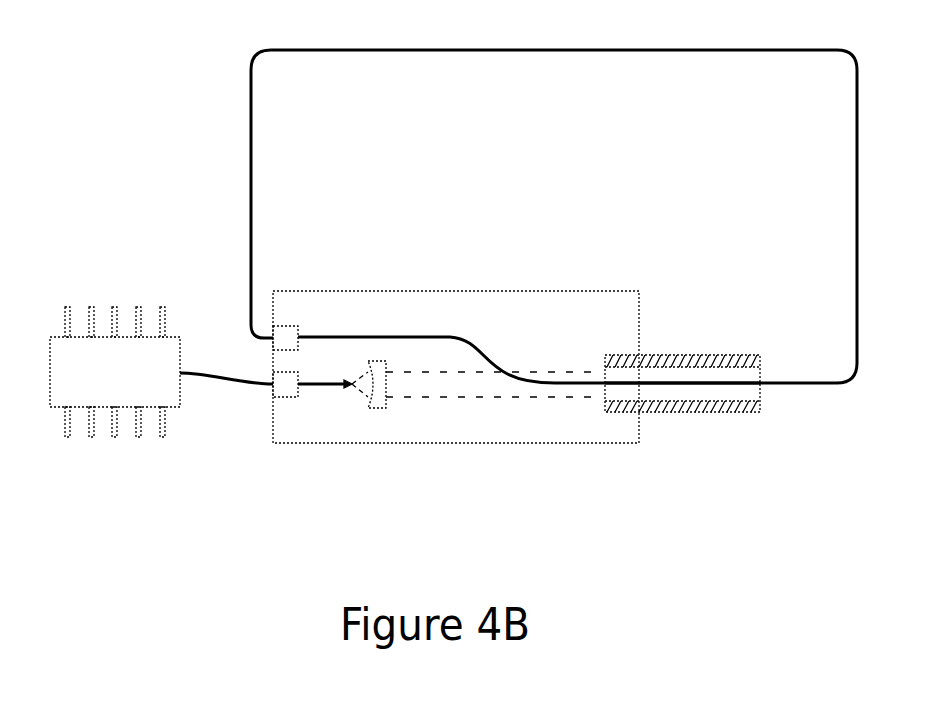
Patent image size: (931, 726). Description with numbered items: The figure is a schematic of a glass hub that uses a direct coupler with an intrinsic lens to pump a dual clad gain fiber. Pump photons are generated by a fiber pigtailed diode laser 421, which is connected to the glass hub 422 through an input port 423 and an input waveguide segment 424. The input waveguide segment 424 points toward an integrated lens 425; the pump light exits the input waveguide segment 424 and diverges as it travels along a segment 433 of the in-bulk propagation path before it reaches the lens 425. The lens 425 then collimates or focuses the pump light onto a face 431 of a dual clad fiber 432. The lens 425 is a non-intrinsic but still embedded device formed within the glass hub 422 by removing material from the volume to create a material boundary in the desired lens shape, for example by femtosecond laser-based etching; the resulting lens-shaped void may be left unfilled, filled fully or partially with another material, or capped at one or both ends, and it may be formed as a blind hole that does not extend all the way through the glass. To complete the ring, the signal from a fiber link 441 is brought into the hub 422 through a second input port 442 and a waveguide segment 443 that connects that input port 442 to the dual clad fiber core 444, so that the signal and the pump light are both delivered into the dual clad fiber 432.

The fiber pigtailed diode laser 421 is at (82, 440).
The glass hub 422 is at (503, 291).
The input port 423 is at (273, 392).
The input waveguide segment 424 is at (310, 386).
The integrated lens 425 is at (382, 410).
The face 431 is at (587, 357).
The dual clad fiber 432 is at (703, 352).
The segment of the in-bulk propagation path 433 is at (358, 404).
The fiber link 441 is at (248, 208).
The input port 442 is at (273, 340).
The waveguide segment 443 is at (433, 337).
The dual clad fiber core 444 is at (680, 383).